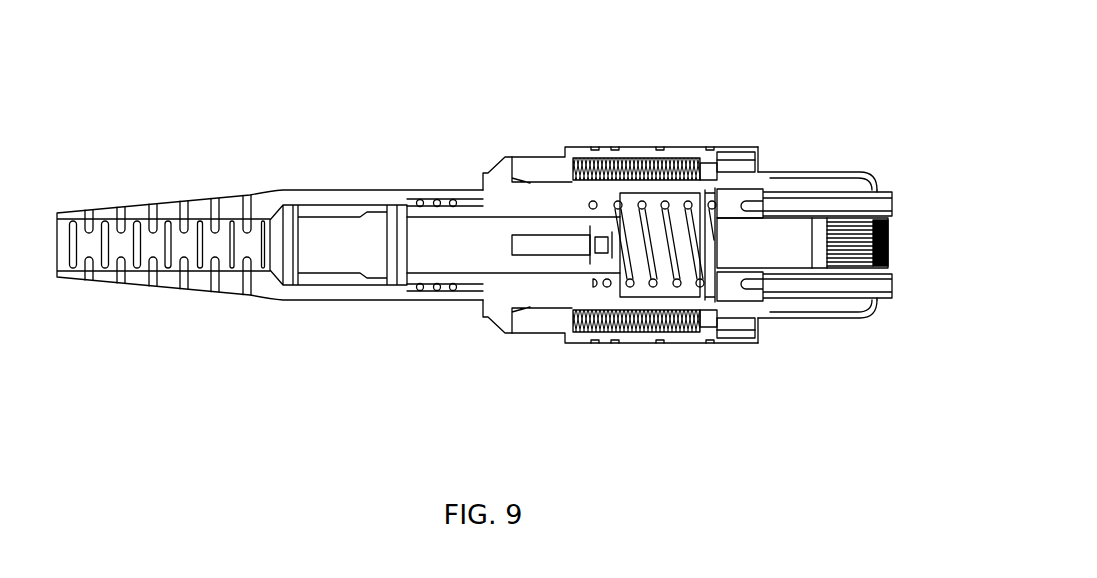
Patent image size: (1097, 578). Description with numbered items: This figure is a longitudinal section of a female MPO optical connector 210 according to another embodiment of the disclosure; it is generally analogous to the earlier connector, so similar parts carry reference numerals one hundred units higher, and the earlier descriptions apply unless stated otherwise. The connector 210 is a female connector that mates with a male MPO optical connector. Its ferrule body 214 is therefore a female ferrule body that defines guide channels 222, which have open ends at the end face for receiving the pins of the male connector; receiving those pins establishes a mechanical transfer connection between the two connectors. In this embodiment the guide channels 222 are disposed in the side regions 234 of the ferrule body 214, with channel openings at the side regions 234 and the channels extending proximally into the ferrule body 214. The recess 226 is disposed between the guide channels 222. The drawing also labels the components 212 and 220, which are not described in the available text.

The MPO optical connector 210 is at (516, 220).
The connector housing 212 is at (598, 112).
The ferrule body 214 is at (887, 174).
The spring 220 is at (650, 327).
The guide channels 222 is at (833, 280).
The recess 226 is at (912, 249).
The side regions 234 is at (918, 191).